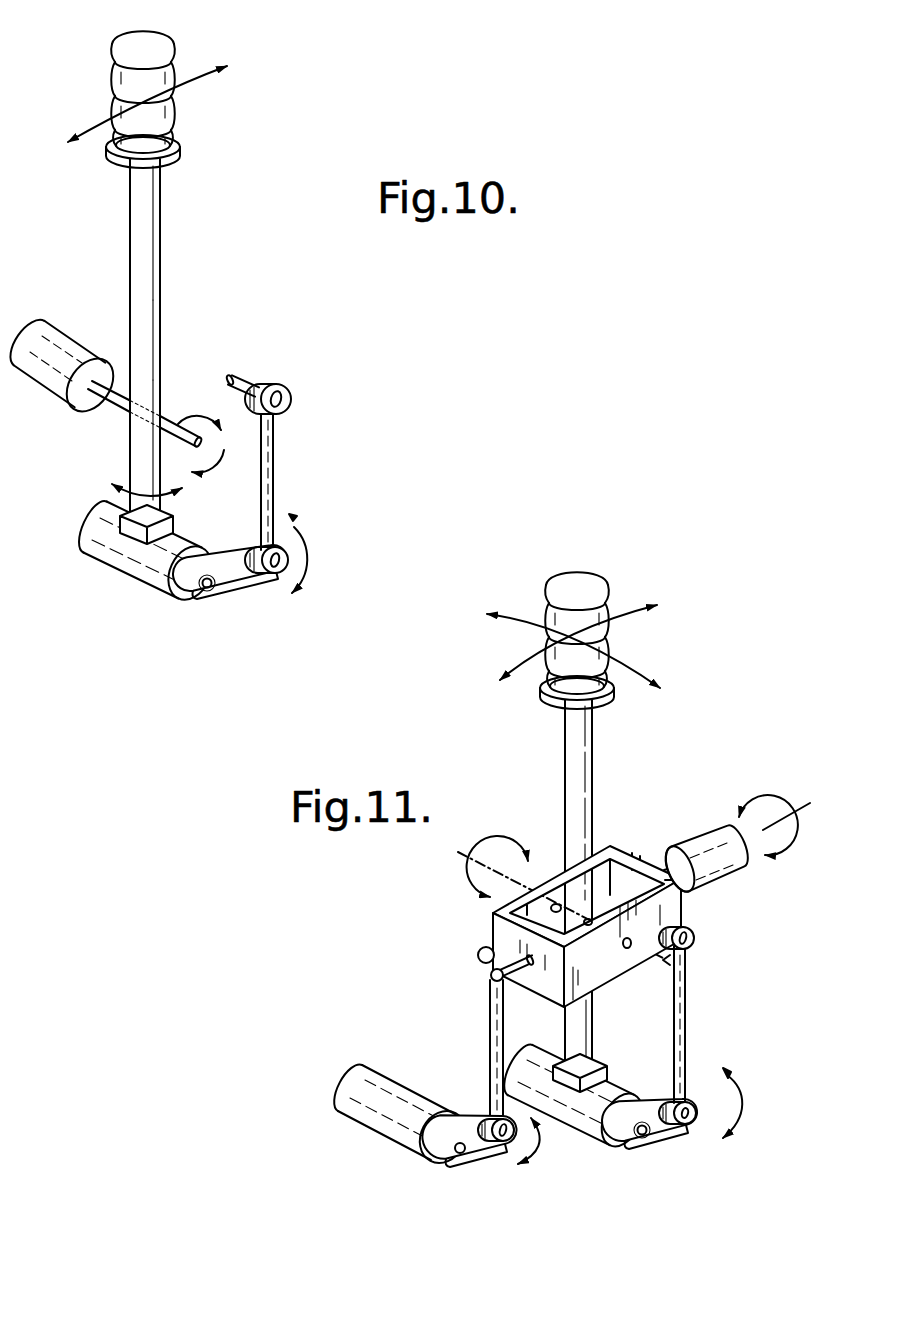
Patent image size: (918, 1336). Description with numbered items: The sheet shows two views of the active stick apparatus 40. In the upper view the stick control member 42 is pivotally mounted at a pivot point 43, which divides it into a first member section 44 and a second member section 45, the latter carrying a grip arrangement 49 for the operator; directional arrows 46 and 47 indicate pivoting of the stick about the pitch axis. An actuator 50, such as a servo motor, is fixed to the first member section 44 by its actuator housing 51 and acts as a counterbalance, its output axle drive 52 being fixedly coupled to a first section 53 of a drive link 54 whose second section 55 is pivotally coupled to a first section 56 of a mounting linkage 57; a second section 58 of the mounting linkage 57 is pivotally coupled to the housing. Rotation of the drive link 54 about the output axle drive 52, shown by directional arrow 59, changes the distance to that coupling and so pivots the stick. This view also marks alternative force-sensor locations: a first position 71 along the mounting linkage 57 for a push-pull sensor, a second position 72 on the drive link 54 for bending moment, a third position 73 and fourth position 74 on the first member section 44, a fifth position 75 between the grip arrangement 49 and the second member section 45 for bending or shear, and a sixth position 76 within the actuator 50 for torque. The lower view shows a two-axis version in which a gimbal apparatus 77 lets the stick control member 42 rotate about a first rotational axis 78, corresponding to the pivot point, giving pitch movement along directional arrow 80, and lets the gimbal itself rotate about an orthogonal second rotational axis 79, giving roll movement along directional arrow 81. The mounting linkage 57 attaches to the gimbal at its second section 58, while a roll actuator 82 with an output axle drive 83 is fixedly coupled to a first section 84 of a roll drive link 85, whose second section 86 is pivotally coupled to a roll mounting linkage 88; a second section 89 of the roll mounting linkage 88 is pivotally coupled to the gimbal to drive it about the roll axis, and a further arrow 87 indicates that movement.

In FIG. 10, the active stick apparatus 40 is at (195, 339).
In FIG. 11, the active stick apparatus 40 is at (560, 908).
In FIG. 10, the stick control member 42 is at (133, 334).
In FIG. 11, the stick control member 42 is at (598, 880).
In FIG. 10, the pivot point 43 is at (160, 418).
In FIG. 10, the first member section 44 is at (133, 443).
In FIG. 11, the first member section 44 is at (590, 1008).
In FIG. 10, the second member section 45 is at (147, 197).
In FIG. 11, the second member section 45 is at (587, 731).
In FIG. 10, the directional arrow 46 is at (195, 72).
In FIG. 10, the directional arrow 47 is at (110, 485).
In FIG. 10, the grip arrangement 49 is at (118, 42).
In FIG. 11, the grip arrangement 49 is at (540, 626).
In FIG. 10, the actuator 50 is at (180, 602).
In FIG. 11, the actuator 50 is at (625, 1152).
In FIG. 10, the actuator housing 51 is at (118, 565).
In FIG. 11, the actuator housing 51 is at (526, 1148).
In FIG. 10, the output axle drive 52 is at (208, 590).
In FIG. 11, the output axle drive 52 is at (650, 1136).
In FIG. 10, the first section of the drive link 53 is at (200, 593).
In FIG. 11, the first section of the drive link 53 is at (640, 1143).
In FIG. 10, the drive link 54 is at (233, 612).
In FIG. 11, the drive link 54 is at (662, 1177).
In FIG. 10, the second section of the drive link 55 is at (293, 521).
In FIG. 11, the second section of the drive link 55 is at (731, 1072).
In FIG. 10, the first section of the mounting linkage 56 is at (278, 590).
In FIG. 11, the first section of the mounting linkage 56 is at (691, 1124).
In FIG. 10, the mounting linkage 57 is at (320, 482).
In FIG. 11, the mounting linkage 57 is at (686, 978).
In FIG. 10, the second section of the mounting linkage 58 is at (283, 388).
In FIG. 11, the second section of the mounting linkage 58 is at (694, 938).
In FIG. 10, the directional arrow 59 is at (307, 550).
In FIG. 11, the directional arrow 59 is at (743, 1097).
In FIG. 10, the first position 71 is at (270, 497).
In FIG. 10, the second position 72 is at (220, 580).
In FIG. 10, the third position 73 is at (150, 220).
In FIG. 10, the fourth position 74 is at (140, 455).
In FIG. 10, the fifth position 75 is at (128, 178).
In FIG. 10, the sixth position 76 is at (133, 567).
In FIG. 11, the gimbal apparatus 77 is at (675, 912).
In FIG. 11, the first rotational axis 78 is at (672, 961).
In FIG. 11, the second rotational axis 79 is at (812, 798).
In FIG. 11, the directional arrow 80 is at (623, 610).
In FIG. 11, the directional arrow 81 is at (637, 667).
In FIG. 11, the roll actuator 82 is at (345, 1095).
In FIG. 11, the output axle drive 83 is at (457, 1158).
In FIG. 11, the first section of the roll drive link 84 is at (416, 1177).
In FIG. 11, the roll drive link 85 is at (480, 1150).
In FIG. 11, the second section of the roll drive link 86 is at (523, 1097).
In FIG. 11, the rotation arrow 87 is at (517, 1168).
In FIG. 11, the roll mounting linkage 88 is at (490, 1007).
In FIG. 11, the second section of the roll mounting linkage 89 is at (480, 950).